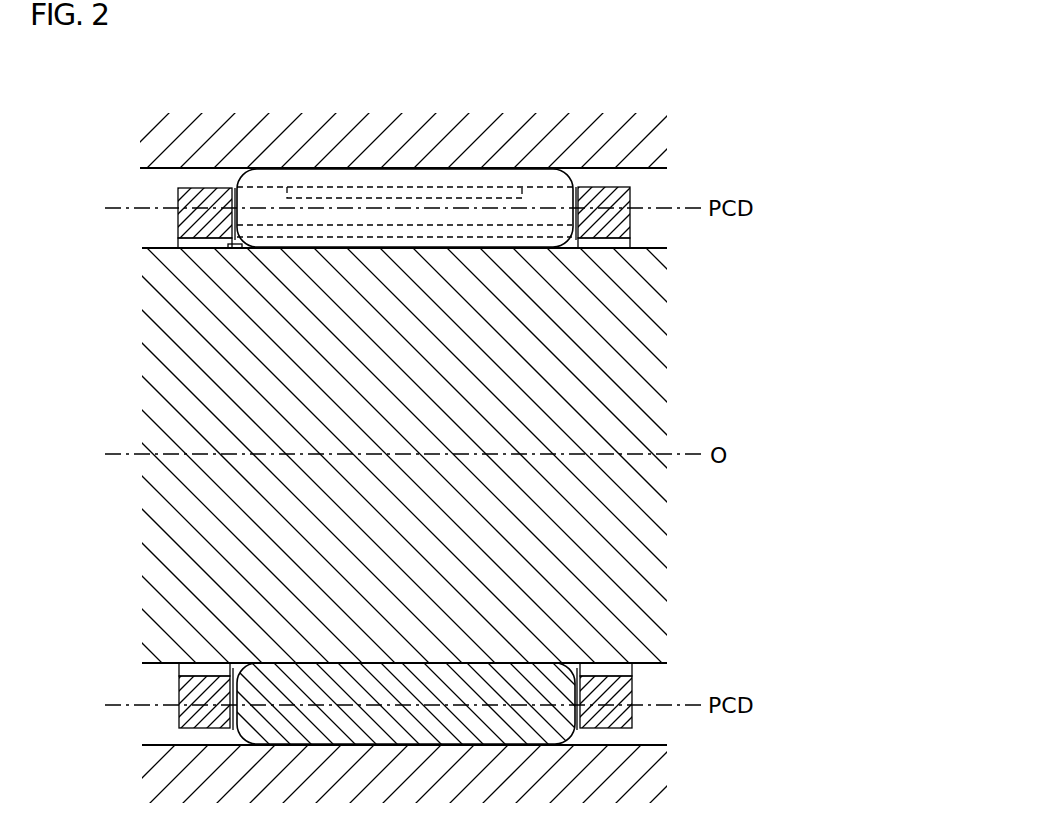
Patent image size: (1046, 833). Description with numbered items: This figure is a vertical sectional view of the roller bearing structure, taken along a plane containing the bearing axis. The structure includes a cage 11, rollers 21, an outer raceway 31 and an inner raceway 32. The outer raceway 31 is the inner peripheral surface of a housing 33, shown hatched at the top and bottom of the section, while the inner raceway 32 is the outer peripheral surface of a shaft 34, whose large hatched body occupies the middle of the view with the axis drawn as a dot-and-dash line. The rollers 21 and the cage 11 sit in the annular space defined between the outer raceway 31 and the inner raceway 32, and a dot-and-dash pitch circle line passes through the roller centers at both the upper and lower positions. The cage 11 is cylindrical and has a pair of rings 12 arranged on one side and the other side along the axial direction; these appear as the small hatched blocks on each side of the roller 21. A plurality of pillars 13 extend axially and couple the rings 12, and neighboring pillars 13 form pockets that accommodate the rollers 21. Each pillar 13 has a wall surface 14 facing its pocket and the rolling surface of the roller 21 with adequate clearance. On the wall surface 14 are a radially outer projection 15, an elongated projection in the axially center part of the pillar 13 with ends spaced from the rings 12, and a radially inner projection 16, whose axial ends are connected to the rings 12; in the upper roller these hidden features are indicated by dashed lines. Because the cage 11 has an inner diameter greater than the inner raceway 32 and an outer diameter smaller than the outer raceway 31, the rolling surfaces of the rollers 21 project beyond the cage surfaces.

The cage 11 is at (166, 693).
The ring 12 is at (200, 187).
The pillar 13 is at (272, 203).
The wall surface 14 is at (362, 213).
The radially outer projection 15 is at (478, 193).
The radially inner projection 16 is at (417, 233).
The roller 21 is at (538, 178).
The outer raceway 31 is at (653, 167).
The inner raceway 32 is at (653, 248).
The housing 33 is at (162, 140).
The shaft 34 is at (165, 320).